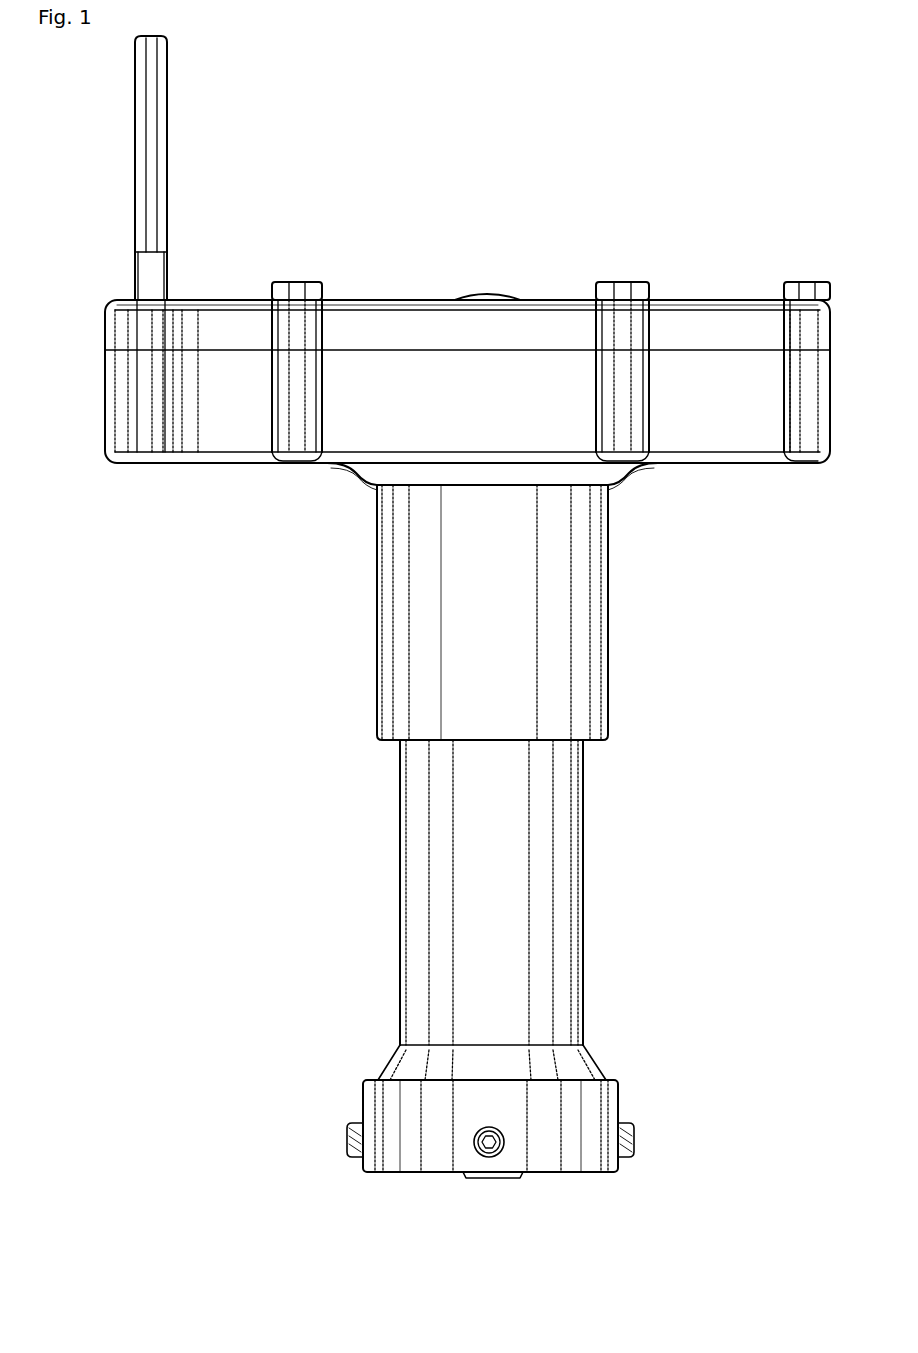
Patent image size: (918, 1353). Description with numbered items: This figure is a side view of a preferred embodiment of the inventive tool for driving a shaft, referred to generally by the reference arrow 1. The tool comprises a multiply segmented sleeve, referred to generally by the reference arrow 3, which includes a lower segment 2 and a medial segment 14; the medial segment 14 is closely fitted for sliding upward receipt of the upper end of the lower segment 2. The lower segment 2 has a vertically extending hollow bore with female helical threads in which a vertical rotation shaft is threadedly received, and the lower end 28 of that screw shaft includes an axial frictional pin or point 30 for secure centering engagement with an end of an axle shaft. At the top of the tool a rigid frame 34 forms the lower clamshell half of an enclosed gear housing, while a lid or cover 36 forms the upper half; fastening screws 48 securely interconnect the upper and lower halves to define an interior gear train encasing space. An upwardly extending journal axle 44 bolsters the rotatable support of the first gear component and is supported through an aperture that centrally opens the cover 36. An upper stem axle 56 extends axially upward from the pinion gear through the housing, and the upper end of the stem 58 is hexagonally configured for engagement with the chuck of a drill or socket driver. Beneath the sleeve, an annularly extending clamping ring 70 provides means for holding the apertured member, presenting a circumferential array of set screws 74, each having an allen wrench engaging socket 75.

The tool for driving a shaft 1 is at (670, 232).
The lower segment 2 is at (547, 872).
The multiply segmented sleeve 3 is at (336, 739).
The medial segment 14 is at (582, 600).
The lower end of the screw shaft 28 is at (473, 1180).
The axial frictional pin or point 30 is at (497, 1183).
The rigid frame 34 is at (230, 420).
The lid or cover 36 is at (397, 320).
The journal axle 44 is at (480, 297).
The fastening screws 48 is at (297, 283).
The upper stem axle 56 is at (148, 268).
The stem 58 is at (157, 143).
The clamping ring 70 is at (390, 1098).
The set screws 74 is at (347, 1140).
The allen wrench engaging socket 75 is at (488, 1143).